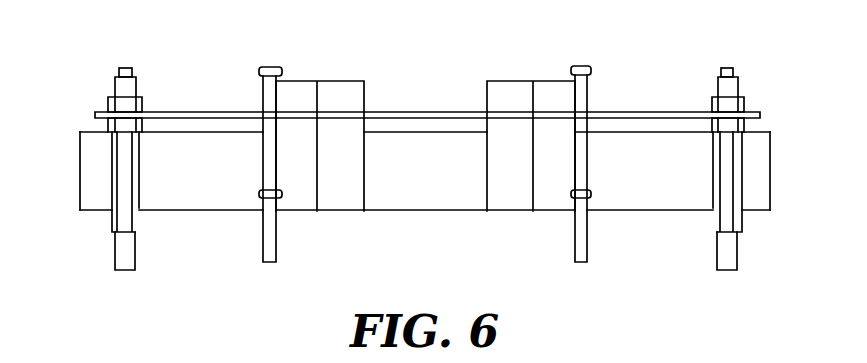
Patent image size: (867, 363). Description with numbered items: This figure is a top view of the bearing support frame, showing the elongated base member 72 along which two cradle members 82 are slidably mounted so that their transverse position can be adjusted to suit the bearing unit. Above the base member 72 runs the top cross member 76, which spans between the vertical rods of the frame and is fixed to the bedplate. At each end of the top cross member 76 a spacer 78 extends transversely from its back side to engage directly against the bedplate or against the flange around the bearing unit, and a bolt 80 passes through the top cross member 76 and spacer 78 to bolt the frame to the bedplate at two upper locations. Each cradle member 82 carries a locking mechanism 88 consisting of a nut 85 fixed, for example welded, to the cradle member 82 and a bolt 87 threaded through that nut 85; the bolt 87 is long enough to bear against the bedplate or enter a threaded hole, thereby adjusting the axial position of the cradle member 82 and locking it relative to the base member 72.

The base member 72 is at (437, 212).
The top cross member 76 is at (438, 110).
The spacer 78 is at (115, 175).
The bolt 80 is at (115, 88).
The cradle member 82 is at (517, 81).
The nut 85 is at (258, 198).
The bolt 87 is at (266, 66).
The locking mechanism 88 is at (259, 93).